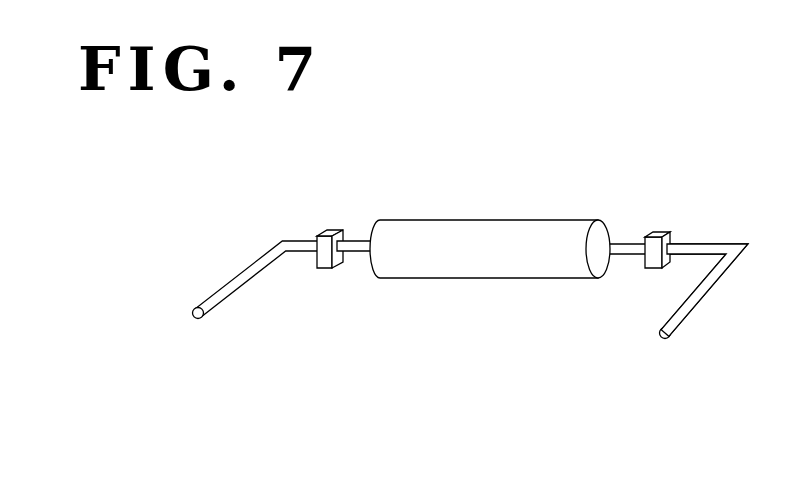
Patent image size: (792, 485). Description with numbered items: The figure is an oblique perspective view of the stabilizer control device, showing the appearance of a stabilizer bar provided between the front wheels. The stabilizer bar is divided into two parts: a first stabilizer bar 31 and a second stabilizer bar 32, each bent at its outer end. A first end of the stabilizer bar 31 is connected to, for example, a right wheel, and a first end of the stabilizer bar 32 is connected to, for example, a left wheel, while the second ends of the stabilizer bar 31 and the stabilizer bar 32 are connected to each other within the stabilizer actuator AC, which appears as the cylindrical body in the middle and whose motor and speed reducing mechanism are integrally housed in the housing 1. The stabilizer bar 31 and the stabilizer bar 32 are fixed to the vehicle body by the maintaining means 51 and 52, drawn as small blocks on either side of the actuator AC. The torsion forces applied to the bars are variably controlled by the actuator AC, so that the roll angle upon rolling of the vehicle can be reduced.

The housing 1 is at (542, 266).
The stabilizer actuator AC is at (418, 220).
The first stabilizer bar 31 is at (228, 291).
The second stabilizer bar 32 is at (722, 277).
The maintaining means 51 is at (327, 230).
The maintaining means 52 is at (655, 230).